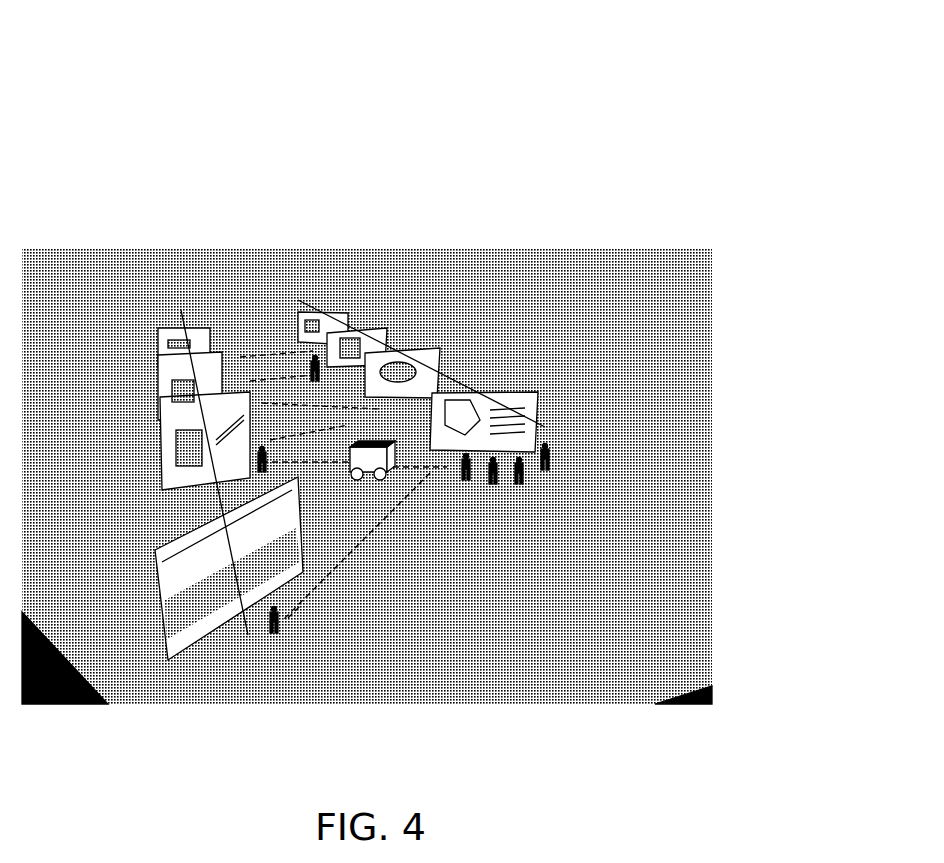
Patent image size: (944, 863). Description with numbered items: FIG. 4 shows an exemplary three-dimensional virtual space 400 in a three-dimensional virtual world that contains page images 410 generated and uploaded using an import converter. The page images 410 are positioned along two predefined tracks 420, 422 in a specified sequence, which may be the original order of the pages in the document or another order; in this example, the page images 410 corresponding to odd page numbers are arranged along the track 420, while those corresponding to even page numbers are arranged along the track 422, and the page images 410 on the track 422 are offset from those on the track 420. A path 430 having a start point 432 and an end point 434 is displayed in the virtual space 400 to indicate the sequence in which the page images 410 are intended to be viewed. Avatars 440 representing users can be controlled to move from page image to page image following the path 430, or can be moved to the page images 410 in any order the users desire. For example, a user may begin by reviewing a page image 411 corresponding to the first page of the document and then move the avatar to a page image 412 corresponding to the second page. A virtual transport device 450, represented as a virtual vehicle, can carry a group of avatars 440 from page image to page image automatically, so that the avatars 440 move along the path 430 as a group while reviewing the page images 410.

The 3D virtual space 400 is at (84, 90).
The page images 410 is at (410, 322).
The page image 411 is at (175, 630).
The page image 412 is at (536, 400).
The track 420 is at (176, 318).
The track 422 is at (313, 290).
The path 430 is at (382, 556).
The start point 432 is at (308, 623).
The end point 434 is at (288, 338).
The avatars 440 is at (305, 373).
The virtual transport device 450 is at (394, 488).